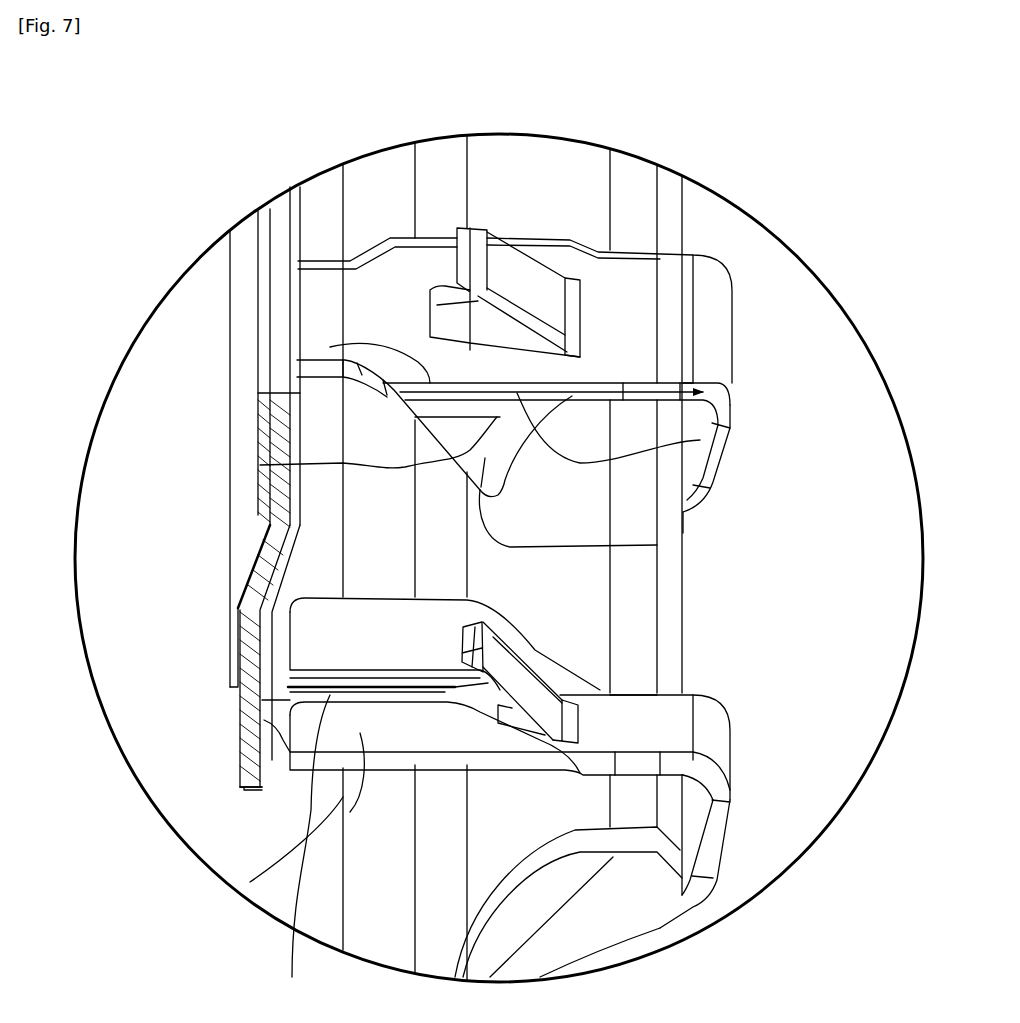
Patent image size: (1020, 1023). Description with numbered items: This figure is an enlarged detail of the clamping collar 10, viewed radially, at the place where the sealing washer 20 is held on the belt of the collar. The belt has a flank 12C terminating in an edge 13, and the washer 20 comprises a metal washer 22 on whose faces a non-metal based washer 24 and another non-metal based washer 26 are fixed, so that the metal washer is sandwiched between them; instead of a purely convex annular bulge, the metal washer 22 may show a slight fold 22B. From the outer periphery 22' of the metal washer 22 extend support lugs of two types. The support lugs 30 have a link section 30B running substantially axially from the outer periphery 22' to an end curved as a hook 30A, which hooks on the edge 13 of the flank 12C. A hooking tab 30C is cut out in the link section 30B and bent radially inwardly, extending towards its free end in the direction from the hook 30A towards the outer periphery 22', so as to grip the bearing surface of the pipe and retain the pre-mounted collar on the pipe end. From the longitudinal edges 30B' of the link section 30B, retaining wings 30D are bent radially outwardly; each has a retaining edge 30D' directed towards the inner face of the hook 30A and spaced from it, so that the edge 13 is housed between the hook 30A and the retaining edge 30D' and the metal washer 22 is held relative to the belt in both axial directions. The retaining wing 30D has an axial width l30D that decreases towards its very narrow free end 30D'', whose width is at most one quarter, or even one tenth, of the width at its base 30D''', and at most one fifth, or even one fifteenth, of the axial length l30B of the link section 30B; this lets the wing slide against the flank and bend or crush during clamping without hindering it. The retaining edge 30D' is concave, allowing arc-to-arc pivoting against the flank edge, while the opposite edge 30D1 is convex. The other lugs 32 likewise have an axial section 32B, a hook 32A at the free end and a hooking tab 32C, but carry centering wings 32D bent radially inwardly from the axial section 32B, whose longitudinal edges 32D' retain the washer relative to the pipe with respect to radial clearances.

The clamping collar 10 is at (820, 352).
The flank 12C is at (703, 608).
The edge of the flank 13 is at (683, 528).
The washer 20 is at (245, 503).
The metal washer 22 is at (210, 488).
The slight fold 22B is at (258, 558).
The outer periphery of the metal washer 22' is at (222, 800).
The non-metal based washer 24 is at (266, 662).
The non-metal based washer 26 is at (236, 633).
The support lug 30 is at (780, 318).
The hook 30A is at (713, 463).
The link section 30B is at (668, 200).
The longitudinal edge of the link section 30B' is at (750, 286).
The hooking tab 30C is at (478, 240).
The retaining wing 30D is at (552, 463).
The retaining edge 30D' is at (651, 445).
The free end of the retaining wing 30D'' is at (543, 482).
The base of the retaining wing 30D''' is at (311, 414).
The edge of the retaining wing 30D1 is at (260, 465).
The length of the link section l30B is at (507, 440).
The width of the retaining wing l30D is at (437, 458).
The lug 32 is at (772, 728).
The hook 32A is at (713, 840).
The axial section 32B is at (633, 713).
The hooking tab 32C is at (487, 640).
The centering wing 32D is at (322, 851).
The longitudinal edge of the centering wing 32D' is at (254, 860).